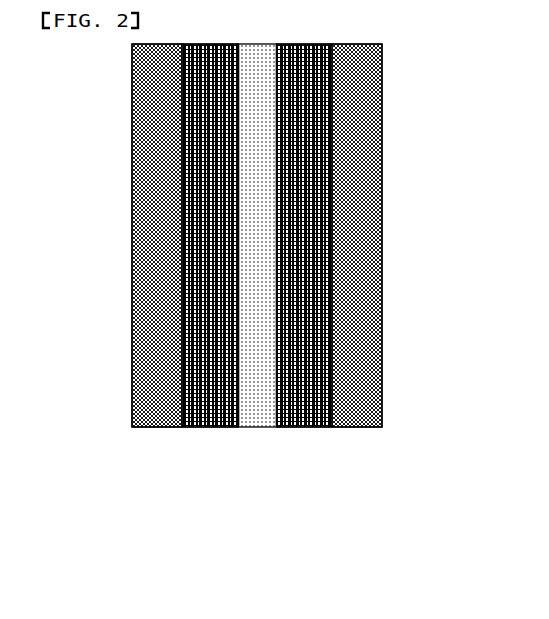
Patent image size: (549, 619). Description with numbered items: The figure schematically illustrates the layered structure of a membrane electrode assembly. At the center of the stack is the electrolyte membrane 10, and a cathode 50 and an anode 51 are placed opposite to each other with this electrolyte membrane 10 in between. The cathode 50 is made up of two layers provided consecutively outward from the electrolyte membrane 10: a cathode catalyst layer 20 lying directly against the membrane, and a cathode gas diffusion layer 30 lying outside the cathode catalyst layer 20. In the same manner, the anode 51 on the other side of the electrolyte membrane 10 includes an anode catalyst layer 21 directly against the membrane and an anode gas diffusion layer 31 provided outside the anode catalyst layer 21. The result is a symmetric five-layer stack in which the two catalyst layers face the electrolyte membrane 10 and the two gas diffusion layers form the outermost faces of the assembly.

The electrolyte membrane 10 is at (258, 427).
The cathode catalyst layer 20 is at (203, 427).
The anode catalyst layer 21 is at (307, 427).
The cathode gas diffusion layer 30 is at (157, 427).
The anode gas diffusion layer 31 is at (362, 427).
The cathode 50 is at (174, 306).
The anode 51 is at (342, 306).